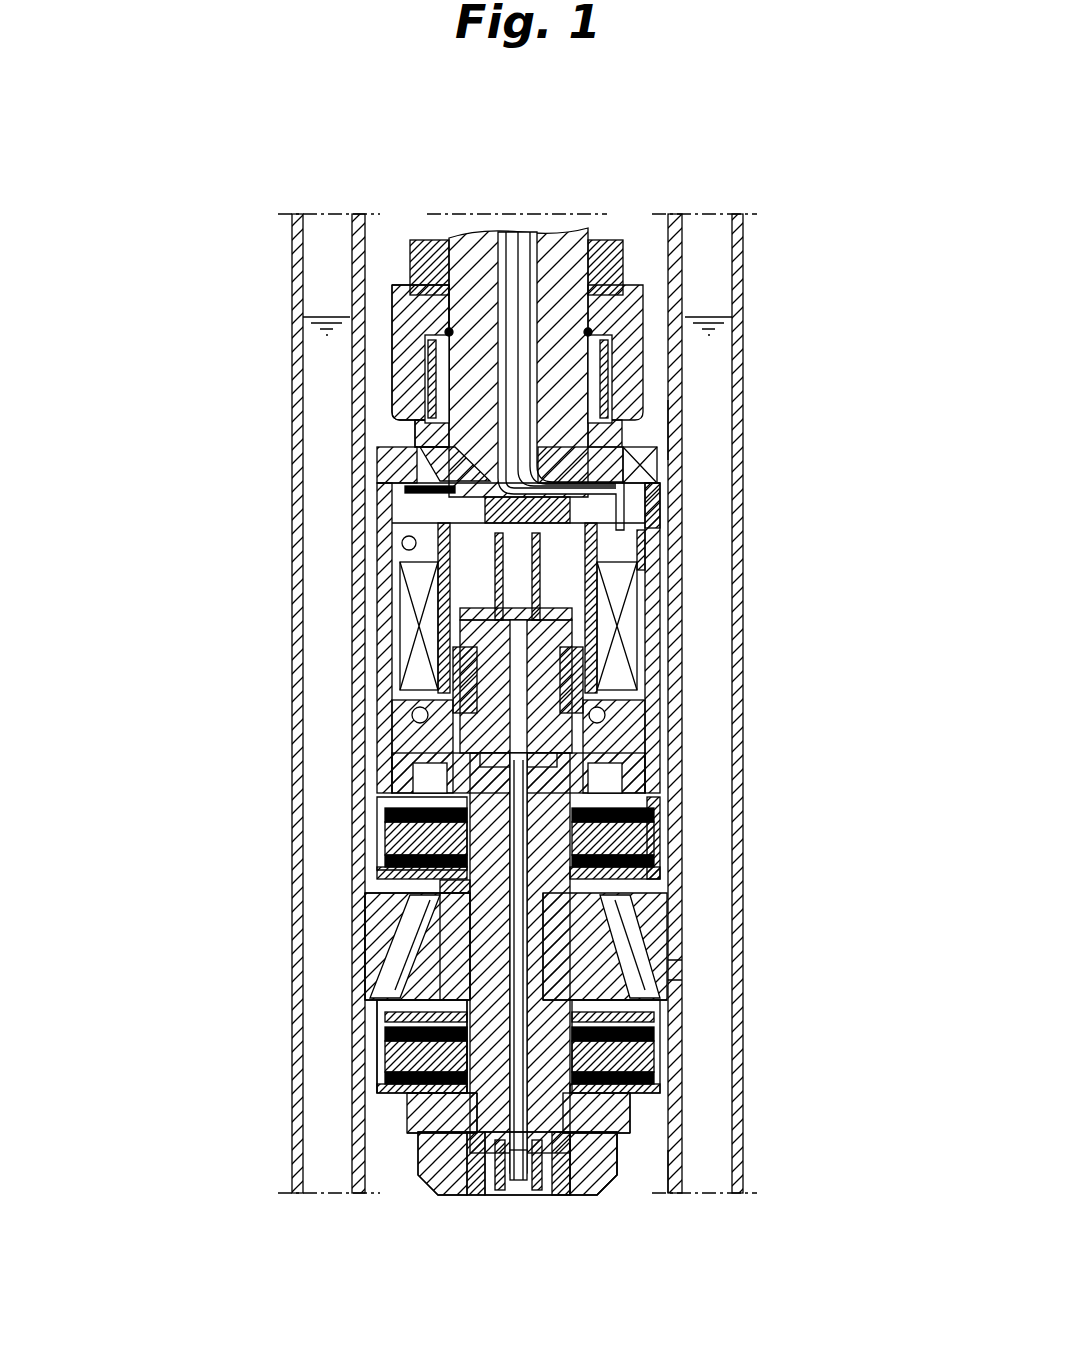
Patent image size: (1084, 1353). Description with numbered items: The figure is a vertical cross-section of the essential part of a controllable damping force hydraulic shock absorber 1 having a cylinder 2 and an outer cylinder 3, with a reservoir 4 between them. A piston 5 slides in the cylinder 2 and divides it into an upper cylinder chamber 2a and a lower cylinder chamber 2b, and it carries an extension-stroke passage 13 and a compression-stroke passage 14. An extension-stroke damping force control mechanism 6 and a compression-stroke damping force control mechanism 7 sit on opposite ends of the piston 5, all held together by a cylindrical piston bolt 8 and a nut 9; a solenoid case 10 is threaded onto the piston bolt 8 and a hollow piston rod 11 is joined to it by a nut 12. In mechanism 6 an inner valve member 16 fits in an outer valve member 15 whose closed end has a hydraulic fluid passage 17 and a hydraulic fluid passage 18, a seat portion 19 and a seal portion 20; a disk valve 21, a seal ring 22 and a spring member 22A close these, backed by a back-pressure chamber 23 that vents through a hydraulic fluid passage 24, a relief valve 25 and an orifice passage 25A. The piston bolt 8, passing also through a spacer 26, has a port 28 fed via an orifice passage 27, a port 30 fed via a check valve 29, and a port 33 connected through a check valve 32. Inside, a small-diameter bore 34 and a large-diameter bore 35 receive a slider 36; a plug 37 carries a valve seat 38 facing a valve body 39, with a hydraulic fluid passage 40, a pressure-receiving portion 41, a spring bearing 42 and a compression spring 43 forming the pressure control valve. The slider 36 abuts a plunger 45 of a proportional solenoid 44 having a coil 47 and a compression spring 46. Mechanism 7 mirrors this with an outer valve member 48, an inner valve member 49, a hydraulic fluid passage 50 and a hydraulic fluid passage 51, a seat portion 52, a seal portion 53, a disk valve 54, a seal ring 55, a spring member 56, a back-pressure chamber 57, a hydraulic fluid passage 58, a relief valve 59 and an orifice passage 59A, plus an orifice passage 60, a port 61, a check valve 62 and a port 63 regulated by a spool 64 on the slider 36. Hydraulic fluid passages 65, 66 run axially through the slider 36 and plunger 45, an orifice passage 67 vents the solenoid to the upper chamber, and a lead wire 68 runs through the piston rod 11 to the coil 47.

The controllable damping force hydraulic shock absorber 1 is at (740, 195).
The cylinder 2 is at (685, 240).
The upper cylinder chamber 2a is at (655, 430).
The lower cylinder chamber 2b is at (690, 1175).
The outer cylinder 3 is at (745, 285).
The reservoir 4 is at (700, 350).
The piston 5 is at (680, 970).
The extension-stroke damping force control mechanism 6 is at (640, 1050).
The compression-stroke damping force control mechanism 7 is at (640, 830).
The piston bolt 8 is at (645, 740).
The nut 9 is at (600, 1135).
The solenoid case 10 is at (645, 525).
The piston rod 11 is at (545, 218).
The nut 12 is at (395, 300).
The extension-stroke passage 13 is at (610, 905).
The compression-stroke passage 14 is at (380, 960).
The outer valve member 15 is at (640, 1090).
The inner valve member 16 is at (645, 1110).
The hydraulic fluid passage 17 is at (620, 1010).
The hydraulic fluid passage 18 is at (650, 1040).
The seat portion 19 is at (470, 1050).
The seal portion 20 is at (440, 1060).
The disk valve 21 is at (445, 1040).
The seal ring 22 is at (440, 1075).
The spring member 22A is at (425, 1110).
The back-pressure chamber 23 is at (430, 1085).
The hydraulic fluid passage 24 is at (470, 1100).
The relief valve 25 is at (490, 1120).
The orifice passage 25A is at (460, 1110).
The spacer 26 is at (425, 1120).
The orifice passage 27 is at (640, 950).
The port 28 is at (620, 930).
The check valve 29 is at (630, 1070).
The port 30 is at (635, 1080).
The check valve 32 is at (500, 1130).
The port 33 is at (660, 1130).
The small-diameter bore 34 is at (470, 985).
The large-diameter bore 35 is at (640, 990).
The slider 36 is at (680, 865).
The plug 37 is at (530, 1150).
The valve seat 38 is at (505, 1150).
The valve body 39 is at (490, 1160).
The hydraulic fluid passage 40 is at (515, 1150).
The pressure-receiving portion 41 is at (400, 1010).
The spring bearing 42 is at (520, 1170).
The compression spring 43 is at (560, 1160).
The proportional solenoid 44 is at (650, 615).
The plunger 45 is at (625, 675).
The compression spring 46 is at (660, 542).
The coil 47 is at (400, 600).
The outer valve member 48 is at (640, 815).
The inner valve member 49 is at (620, 800).
The hydraulic fluid passage 50 is at (460, 920).
The hydraulic fluid passage 51 is at (450, 895).
The seat portion 52 is at (395, 885).
The seal portion 53 is at (420, 880).
The disk valve 54 is at (420, 910).
The seal ring 55 is at (400, 895).
The spring member 56 is at (440, 880).
The back-pressure chamber 57 is at (400, 860).
The hydraulic fluid passage 58 is at (410, 835).
The relief valve 59 is at (440, 800).
The orifice passage 59A is at (640, 760).
The orifice passage 60 is at (400, 935).
The port 61 is at (340, 965).
The check valve 62 is at (430, 760).
The port 63 is at (430, 720).
The spool 64 is at (655, 845).
The hydraulic fluid passage 65 is at (635, 715).
The hydraulic fluid passage 66 is at (625, 695).
The orifice passage 67 is at (380, 462).
The lead wire 68 is at (650, 500).